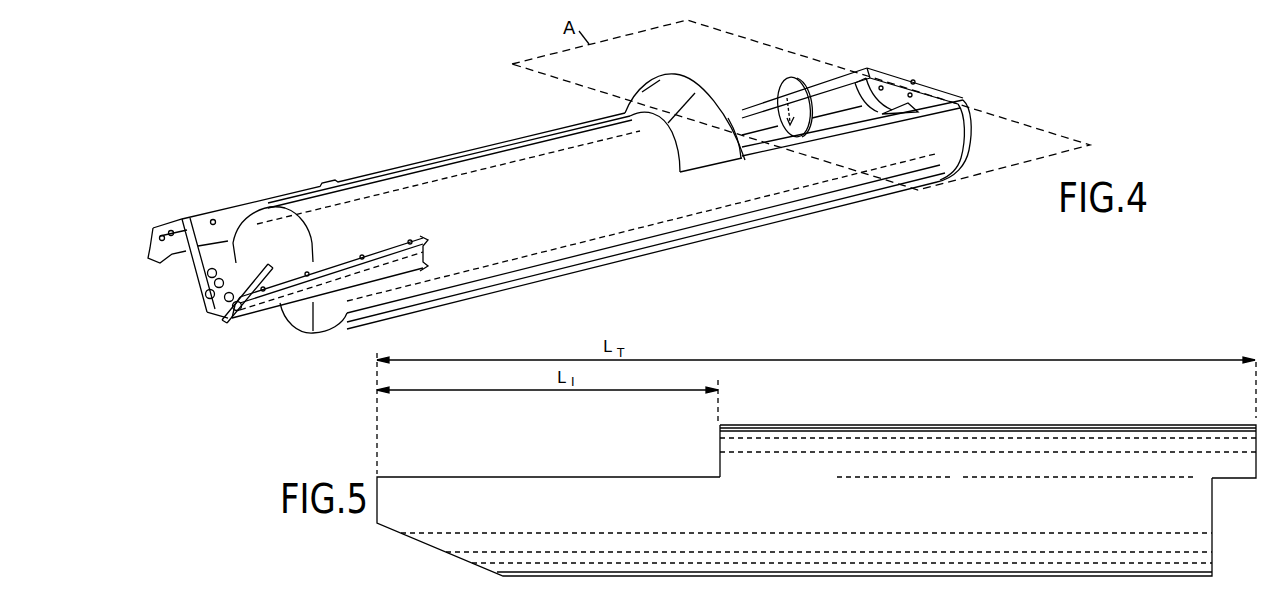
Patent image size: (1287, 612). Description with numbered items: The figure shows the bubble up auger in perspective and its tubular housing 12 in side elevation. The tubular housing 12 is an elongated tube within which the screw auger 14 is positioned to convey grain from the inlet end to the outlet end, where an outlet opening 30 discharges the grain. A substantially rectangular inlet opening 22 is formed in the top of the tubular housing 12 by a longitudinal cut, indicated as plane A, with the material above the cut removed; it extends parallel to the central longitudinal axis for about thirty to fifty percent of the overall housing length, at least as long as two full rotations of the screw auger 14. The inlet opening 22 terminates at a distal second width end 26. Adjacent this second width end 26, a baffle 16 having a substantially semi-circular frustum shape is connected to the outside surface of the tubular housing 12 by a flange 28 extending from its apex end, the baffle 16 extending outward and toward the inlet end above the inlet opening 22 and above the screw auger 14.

In FIG. 4, the tubular housing 12 is at (467, 297).
In FIG. 5, the screw auger 14 is at (977, 424).
In FIG. 4, the baffle 16 is at (710, 155).
In FIG. 4, the inlet opening 22 is at (748, 103).
In FIG. 5, the inlet opening 22 is at (552, 476).
In FIG. 5, the second width end 26 is at (720, 425).
In FIG. 4, the flange 28 is at (674, 173).
In FIG. 4, the outlet opening 30 is at (293, 329).